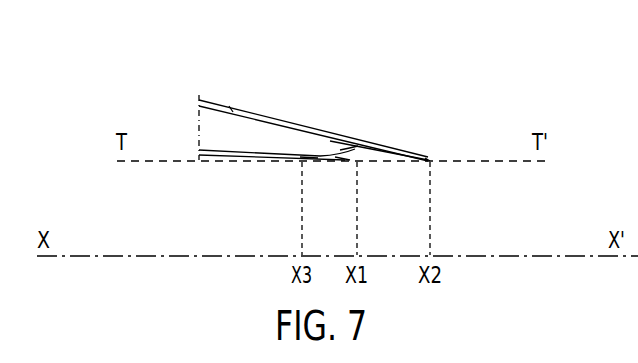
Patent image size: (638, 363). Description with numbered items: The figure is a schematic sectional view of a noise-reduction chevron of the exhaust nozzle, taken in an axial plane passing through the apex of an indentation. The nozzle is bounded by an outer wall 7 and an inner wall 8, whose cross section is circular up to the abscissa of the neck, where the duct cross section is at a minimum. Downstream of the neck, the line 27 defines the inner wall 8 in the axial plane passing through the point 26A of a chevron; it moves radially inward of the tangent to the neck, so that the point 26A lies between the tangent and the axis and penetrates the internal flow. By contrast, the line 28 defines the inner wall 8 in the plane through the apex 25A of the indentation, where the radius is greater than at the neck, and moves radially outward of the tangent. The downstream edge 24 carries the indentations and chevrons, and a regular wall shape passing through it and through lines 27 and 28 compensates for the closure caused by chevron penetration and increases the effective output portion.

The outer wall 7 is at (297, 125).
The inner wall 8 is at (216, 161).
The downstream edge 24 is at (398, 152).
The apex 25A is at (342, 150).
The point 26A is at (430, 162).
The line 27 is at (308, 163).
The line 28 is at (343, 158).